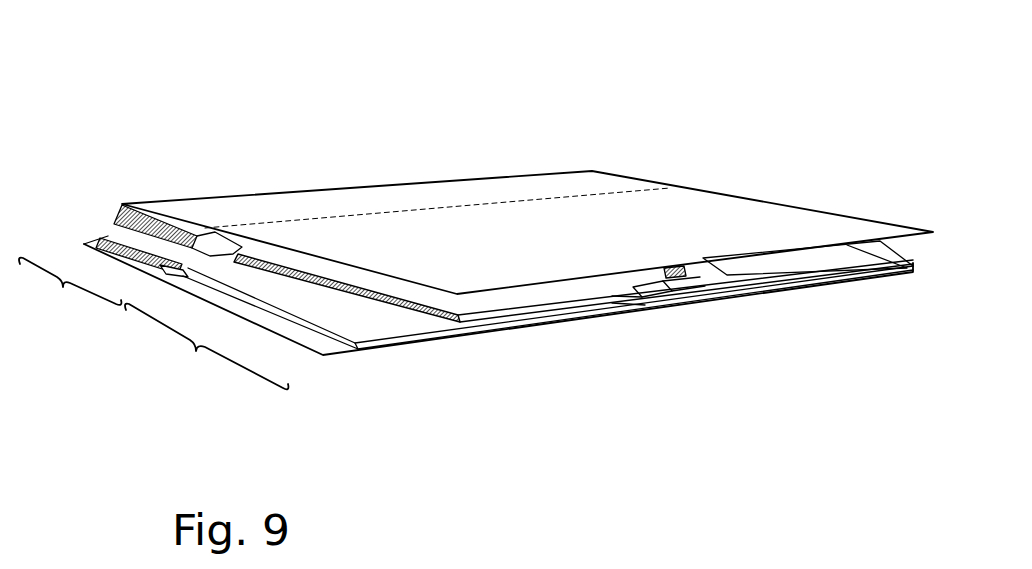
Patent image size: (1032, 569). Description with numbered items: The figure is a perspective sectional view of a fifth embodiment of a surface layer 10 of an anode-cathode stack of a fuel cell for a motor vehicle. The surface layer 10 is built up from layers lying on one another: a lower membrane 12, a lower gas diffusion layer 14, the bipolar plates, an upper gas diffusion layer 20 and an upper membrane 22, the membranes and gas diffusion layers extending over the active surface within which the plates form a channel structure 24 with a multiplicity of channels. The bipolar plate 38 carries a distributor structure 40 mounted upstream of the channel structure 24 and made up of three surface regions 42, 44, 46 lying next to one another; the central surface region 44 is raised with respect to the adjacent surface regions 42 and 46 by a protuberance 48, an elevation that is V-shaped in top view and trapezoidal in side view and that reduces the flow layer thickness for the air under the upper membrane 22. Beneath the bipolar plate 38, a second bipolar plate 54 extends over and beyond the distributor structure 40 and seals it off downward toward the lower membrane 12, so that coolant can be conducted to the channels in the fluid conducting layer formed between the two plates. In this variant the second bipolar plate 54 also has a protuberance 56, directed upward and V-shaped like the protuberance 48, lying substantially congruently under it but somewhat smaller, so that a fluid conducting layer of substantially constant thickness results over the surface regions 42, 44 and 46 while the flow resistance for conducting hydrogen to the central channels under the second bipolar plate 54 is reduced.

The surface layer 10 is at (208, 110).
The lower membrane 12 is at (343, 357).
The lower gas diffusion layer 14 is at (106, 236).
The upper gas diffusion layer 20 is at (124, 202).
The upper membrane 22 is at (589, 180).
The channel structure 24 is at (70, 299).
The bipolar plate 38 is at (396, 290).
The distributor structure 40 is at (206, 352).
The surface region 42 is at (531, 302).
The central surface region 44 is at (679, 277).
The surface region 46 is at (798, 254).
The protuberance 48 is at (649, 278).
The second bipolar plate 54 is at (402, 326).
The protuberance 56 is at (668, 293).